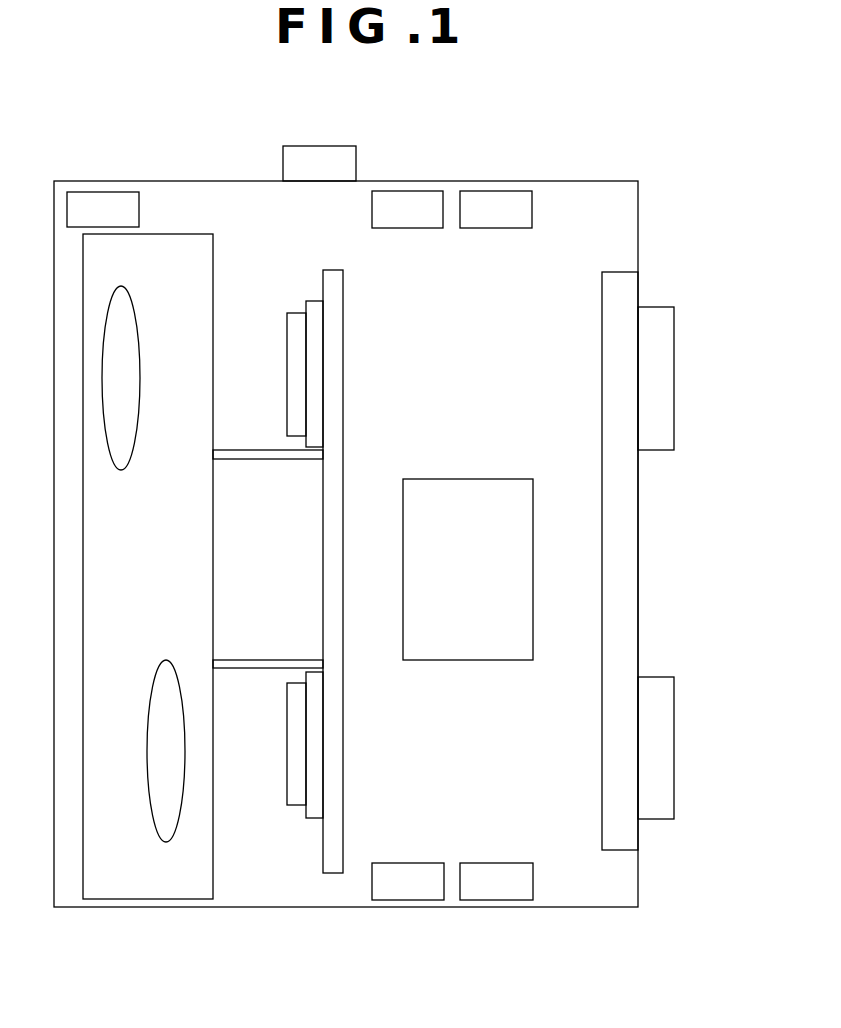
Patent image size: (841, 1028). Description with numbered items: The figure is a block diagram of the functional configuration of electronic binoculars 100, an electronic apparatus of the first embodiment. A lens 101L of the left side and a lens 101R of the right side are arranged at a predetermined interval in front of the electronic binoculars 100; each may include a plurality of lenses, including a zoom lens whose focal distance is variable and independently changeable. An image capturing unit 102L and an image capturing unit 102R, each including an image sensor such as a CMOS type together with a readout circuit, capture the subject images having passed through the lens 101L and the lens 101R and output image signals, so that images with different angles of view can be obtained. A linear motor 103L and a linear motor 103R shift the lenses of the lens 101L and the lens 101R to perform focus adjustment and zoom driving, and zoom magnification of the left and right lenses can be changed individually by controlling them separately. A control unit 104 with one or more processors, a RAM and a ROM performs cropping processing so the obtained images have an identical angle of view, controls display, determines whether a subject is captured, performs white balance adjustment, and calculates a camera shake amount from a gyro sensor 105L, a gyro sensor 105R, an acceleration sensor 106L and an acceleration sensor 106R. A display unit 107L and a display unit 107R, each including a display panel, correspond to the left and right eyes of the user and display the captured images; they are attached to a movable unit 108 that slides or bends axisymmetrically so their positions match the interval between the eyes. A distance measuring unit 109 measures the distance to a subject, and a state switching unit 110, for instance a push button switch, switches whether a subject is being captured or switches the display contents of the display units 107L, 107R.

The electronic binoculars 100 is at (90, 181).
The lens of the right side 101R is at (132, 297).
The lens of the left side 101L is at (155, 830).
The image capturing unit of the right side 102R is at (294, 288).
The image capturing unit of the left side 102L is at (300, 840).
The linear motor 103R is at (255, 450).
The linear motor 103L is at (250, 668).
The control unit 104 is at (467, 479).
The gyro sensor 105R is at (410, 191).
The gyro sensor 105L is at (408, 900).
The acceleration sensor 106R is at (500, 191).
The acceleration sensor 106L is at (493, 900).
The display unit 107R is at (657, 307).
The display unit 107L is at (654, 819).
The movable unit 108 is at (622, 272).
The distance measuring unit 109 is at (128, 192).
The state switching unit 110 is at (322, 146).